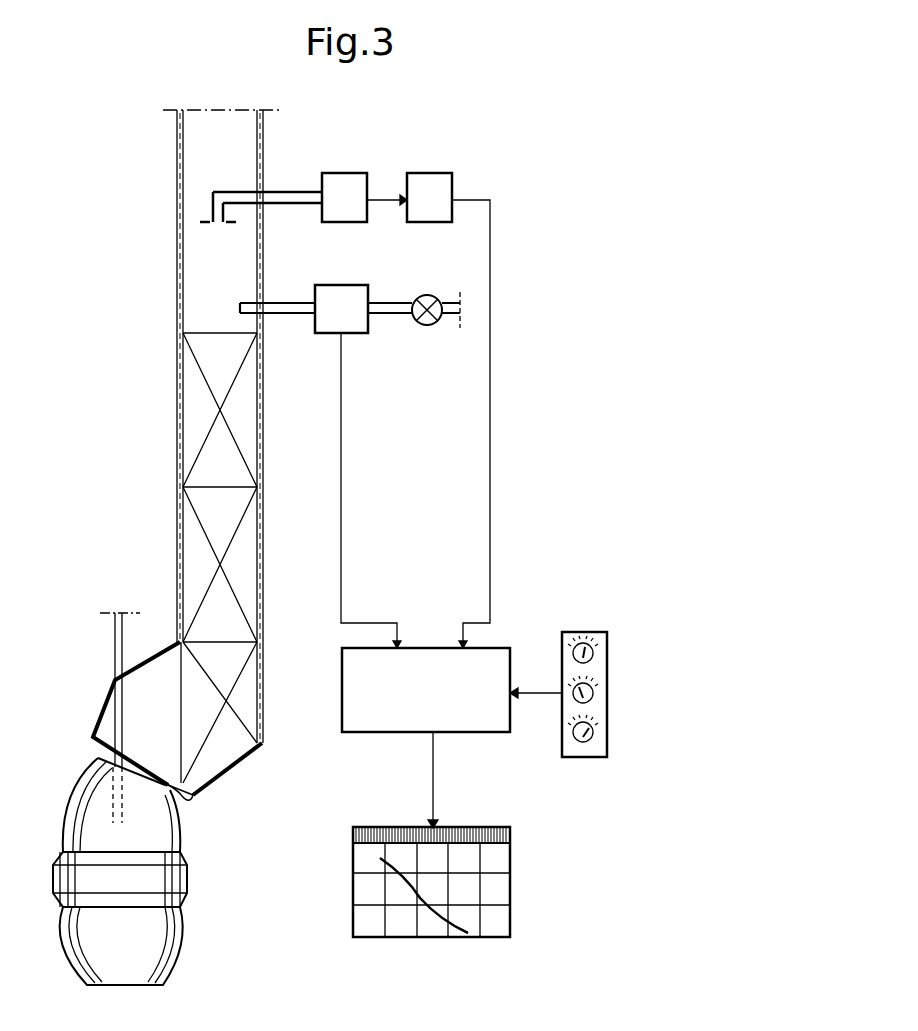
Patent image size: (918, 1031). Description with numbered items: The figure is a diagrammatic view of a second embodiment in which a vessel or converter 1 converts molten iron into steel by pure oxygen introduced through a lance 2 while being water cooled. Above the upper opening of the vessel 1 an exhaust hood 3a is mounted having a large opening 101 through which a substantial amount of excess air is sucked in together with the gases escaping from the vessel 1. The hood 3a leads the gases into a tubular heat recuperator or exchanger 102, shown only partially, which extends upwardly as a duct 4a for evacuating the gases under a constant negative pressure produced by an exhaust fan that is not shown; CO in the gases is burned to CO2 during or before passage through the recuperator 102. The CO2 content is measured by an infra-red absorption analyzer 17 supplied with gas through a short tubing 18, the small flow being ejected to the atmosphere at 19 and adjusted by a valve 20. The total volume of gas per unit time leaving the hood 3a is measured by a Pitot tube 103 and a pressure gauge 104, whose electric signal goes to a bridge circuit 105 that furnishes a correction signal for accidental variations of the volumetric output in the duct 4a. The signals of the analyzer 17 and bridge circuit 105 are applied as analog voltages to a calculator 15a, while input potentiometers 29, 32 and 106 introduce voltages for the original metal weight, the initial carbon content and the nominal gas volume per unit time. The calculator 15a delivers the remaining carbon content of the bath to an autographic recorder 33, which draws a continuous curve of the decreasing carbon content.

The vessel or converter 1 is at (63, 950).
The lance 2 is at (115, 652).
The exhaust hood 3a is at (93, 722).
The duct 4a is at (192, 150).
The calculator 15a is at (498, 655).
The analyzer 17 is at (352, 296).
The short tubing 18 is at (276, 311).
The ejection point to atmosphere 19 is at (463, 313).
The valve 20 is at (429, 296).
The input potentiometer 29 is at (596, 652).
The input potentiometer 32 is at (593, 695).
The autographic recorder 33 is at (505, 890).
The large opening 101 is at (188, 798).
The tubular heat recuperator or exchanger 102 is at (188, 452).
The Pitot tube 103 is at (213, 200).
The pressure gauge 104 is at (342, 182).
The bridge circuit 105 is at (430, 182).
The input potentiometer 106 is at (591, 738).